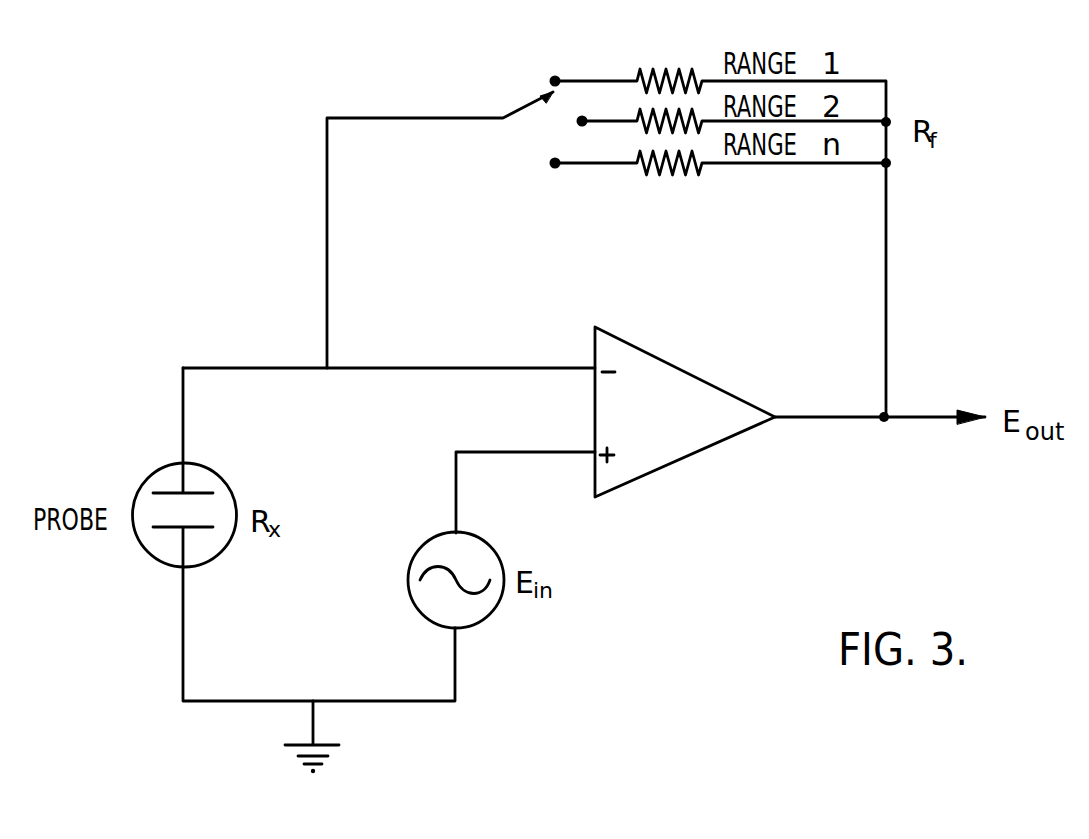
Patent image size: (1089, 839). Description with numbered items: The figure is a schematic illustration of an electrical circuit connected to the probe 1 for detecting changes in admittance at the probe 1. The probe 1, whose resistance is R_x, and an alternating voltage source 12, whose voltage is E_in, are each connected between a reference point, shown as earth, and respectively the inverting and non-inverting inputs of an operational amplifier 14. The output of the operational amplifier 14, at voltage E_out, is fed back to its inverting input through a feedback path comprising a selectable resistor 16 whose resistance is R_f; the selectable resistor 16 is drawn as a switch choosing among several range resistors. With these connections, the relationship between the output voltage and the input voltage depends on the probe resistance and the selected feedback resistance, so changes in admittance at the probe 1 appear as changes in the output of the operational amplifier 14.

The probe 1 is at (218, 470).
The alternating voltage source 12 is at (492, 549).
The operational amplifier 14 is at (710, 380).
The selectable resistor 16 is at (600, 170).